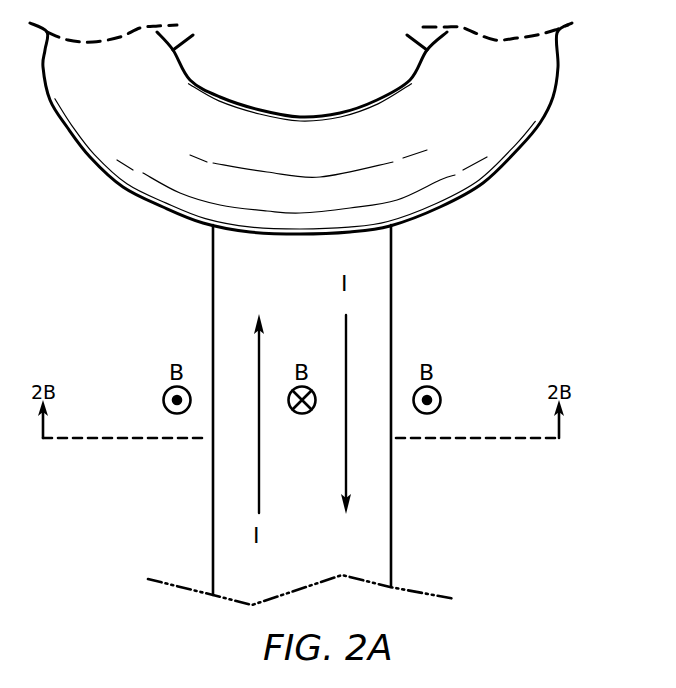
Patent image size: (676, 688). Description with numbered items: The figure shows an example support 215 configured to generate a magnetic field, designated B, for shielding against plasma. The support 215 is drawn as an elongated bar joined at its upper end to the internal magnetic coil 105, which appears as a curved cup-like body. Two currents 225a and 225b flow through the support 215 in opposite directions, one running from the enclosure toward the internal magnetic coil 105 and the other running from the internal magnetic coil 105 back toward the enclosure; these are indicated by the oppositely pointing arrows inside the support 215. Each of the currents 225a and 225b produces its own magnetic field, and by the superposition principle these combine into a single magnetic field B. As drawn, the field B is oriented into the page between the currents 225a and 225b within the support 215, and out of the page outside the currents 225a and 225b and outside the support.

The internal magnetic coil 105 is at (545, 83).
The support 215 is at (391, 262).
The current 225a is at (248, 485).
The current 225b is at (368, 485).